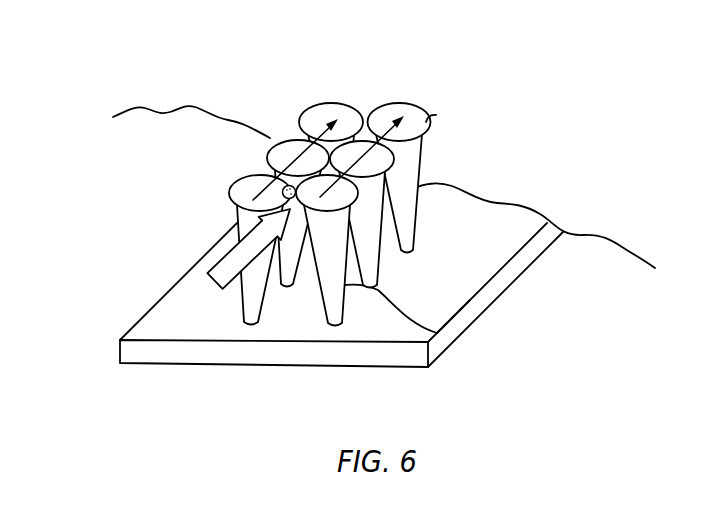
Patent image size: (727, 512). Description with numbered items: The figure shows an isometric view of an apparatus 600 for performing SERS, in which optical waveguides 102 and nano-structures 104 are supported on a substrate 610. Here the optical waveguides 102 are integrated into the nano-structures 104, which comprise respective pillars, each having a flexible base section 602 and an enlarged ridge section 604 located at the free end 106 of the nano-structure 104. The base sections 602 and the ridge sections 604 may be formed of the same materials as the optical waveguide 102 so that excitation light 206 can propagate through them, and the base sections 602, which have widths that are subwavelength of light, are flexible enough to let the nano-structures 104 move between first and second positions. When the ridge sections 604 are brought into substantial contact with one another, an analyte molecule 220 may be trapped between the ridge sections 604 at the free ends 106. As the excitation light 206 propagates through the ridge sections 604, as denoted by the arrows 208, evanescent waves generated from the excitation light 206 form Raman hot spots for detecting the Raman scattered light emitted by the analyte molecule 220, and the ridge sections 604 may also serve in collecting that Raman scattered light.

The apparatus 600 is at (105, 65).
The optical waveguide 102 is at (219, 165).
The nano-structure 104 is at (327, 214).
The free end 106 is at (230, 193).
The excitation light 206 is at (208, 262).
The arrow 208 is at (327, 190).
The analyte molecule 220 is at (268, 150).
The base section 602 is at (460, 335).
The ridge section 604 is at (428, 119).
The substrate 610 is at (243, 367).